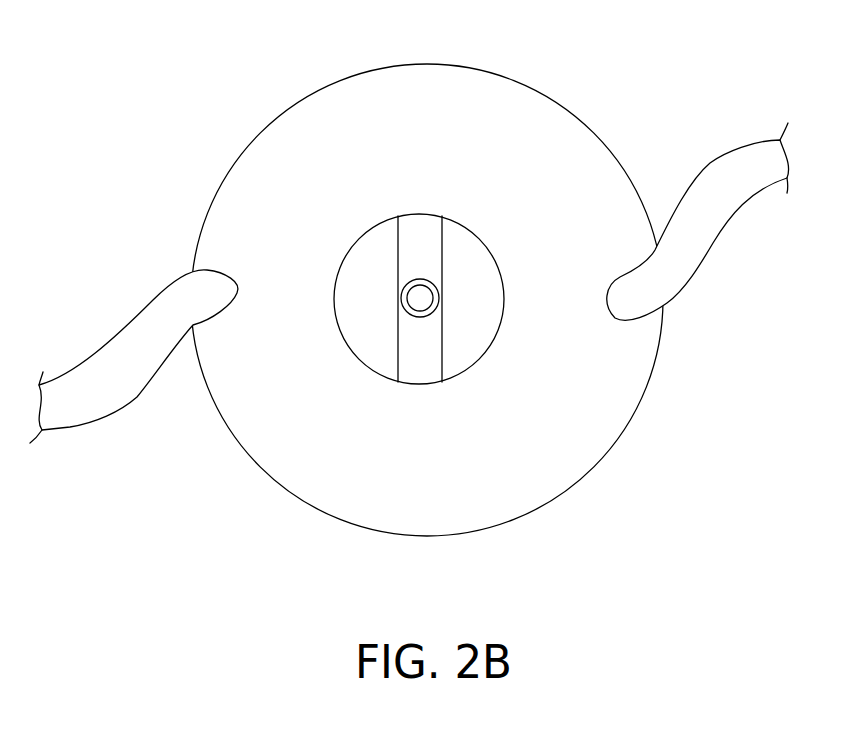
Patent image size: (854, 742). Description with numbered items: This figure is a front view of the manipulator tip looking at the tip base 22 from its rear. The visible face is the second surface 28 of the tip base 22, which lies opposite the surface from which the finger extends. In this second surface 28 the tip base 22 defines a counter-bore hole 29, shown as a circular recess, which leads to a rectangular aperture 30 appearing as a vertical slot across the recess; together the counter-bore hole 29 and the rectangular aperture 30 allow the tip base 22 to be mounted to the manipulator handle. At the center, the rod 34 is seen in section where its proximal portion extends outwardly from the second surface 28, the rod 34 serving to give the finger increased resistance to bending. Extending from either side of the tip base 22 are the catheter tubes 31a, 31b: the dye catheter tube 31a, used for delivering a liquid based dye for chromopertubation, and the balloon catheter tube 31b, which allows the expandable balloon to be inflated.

The tip base 22 is at (427, 275).
The second surface 28 is at (425, 466).
The counter-bore hole 29 is at (340, 332).
The rectangular aperture 30 is at (398, 267).
The rod 34 is at (423, 298).
The dye catheter tube 31a is at (120, 332).
The balloon catheter tube 31b is at (743, 143).